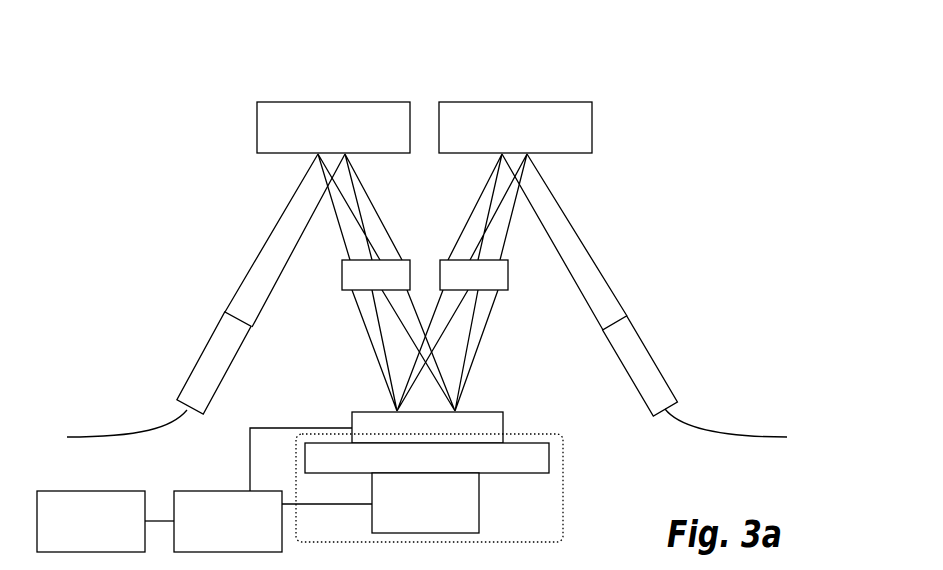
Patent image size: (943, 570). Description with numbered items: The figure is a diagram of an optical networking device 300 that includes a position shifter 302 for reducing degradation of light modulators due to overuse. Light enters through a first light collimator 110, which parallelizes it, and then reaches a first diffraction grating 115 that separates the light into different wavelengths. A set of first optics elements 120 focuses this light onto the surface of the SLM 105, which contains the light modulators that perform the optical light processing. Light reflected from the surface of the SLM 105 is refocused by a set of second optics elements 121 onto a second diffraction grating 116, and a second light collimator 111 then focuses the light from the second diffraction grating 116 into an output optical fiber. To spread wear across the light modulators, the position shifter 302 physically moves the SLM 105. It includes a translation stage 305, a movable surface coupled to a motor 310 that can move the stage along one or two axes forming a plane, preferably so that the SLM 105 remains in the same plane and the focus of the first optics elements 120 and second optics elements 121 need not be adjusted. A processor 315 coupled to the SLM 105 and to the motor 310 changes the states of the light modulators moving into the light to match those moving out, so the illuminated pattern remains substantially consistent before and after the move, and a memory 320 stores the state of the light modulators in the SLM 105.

The optical networking device 300 is at (147, 52).
The second diffraction grating 116 is at (272, 102).
The first diffraction grating 115 is at (577, 102).
The set of second optics elements 121 is at (342, 271).
The set of first optics elements 120 is at (509, 269).
The second light collimator 111 is at (199, 362).
The first light collimator 110 is at (646, 346).
The SLM 105 is at (492, 412).
The translation stage 305 is at (538, 443).
The position shifter 302 is at (563, 481).
The motor 310 is at (480, 498).
The processor 315 is at (191, 491).
The memory 320 is at (87, 491).